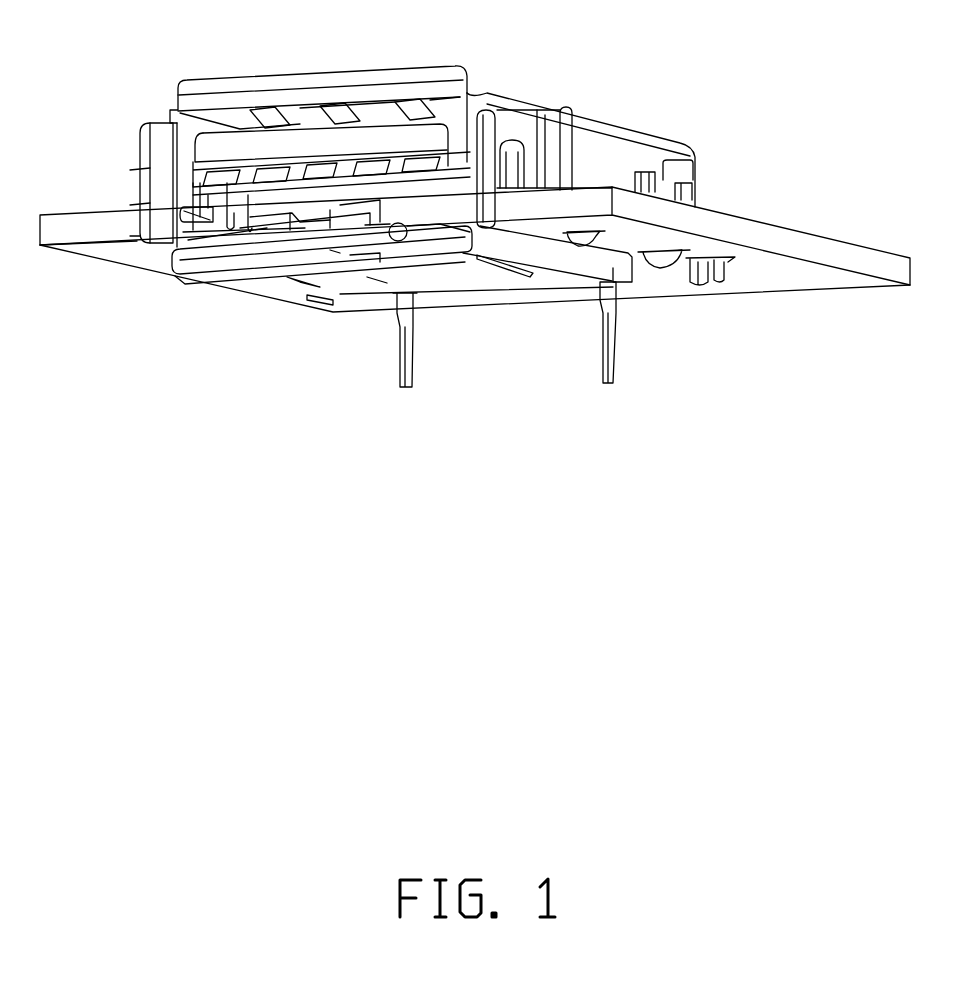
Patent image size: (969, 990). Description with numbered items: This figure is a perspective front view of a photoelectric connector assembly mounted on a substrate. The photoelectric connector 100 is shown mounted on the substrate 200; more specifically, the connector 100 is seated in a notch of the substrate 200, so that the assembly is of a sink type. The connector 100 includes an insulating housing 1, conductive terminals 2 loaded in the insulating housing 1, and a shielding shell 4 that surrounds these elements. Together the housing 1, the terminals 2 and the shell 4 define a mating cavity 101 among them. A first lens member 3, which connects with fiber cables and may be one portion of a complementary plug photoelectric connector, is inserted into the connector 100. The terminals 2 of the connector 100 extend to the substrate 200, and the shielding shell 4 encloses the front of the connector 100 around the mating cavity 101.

The insulating housing 1 is at (387, 147).
The conductive terminals 2 is at (345, 203).
The first lens member 3 is at (430, 236).
The shielding shell 4 is at (157, 170).
The photoelectric connector 100 is at (598, 148).
The mating cavity 101 is at (267, 228).
The substrate 200 is at (737, 228).